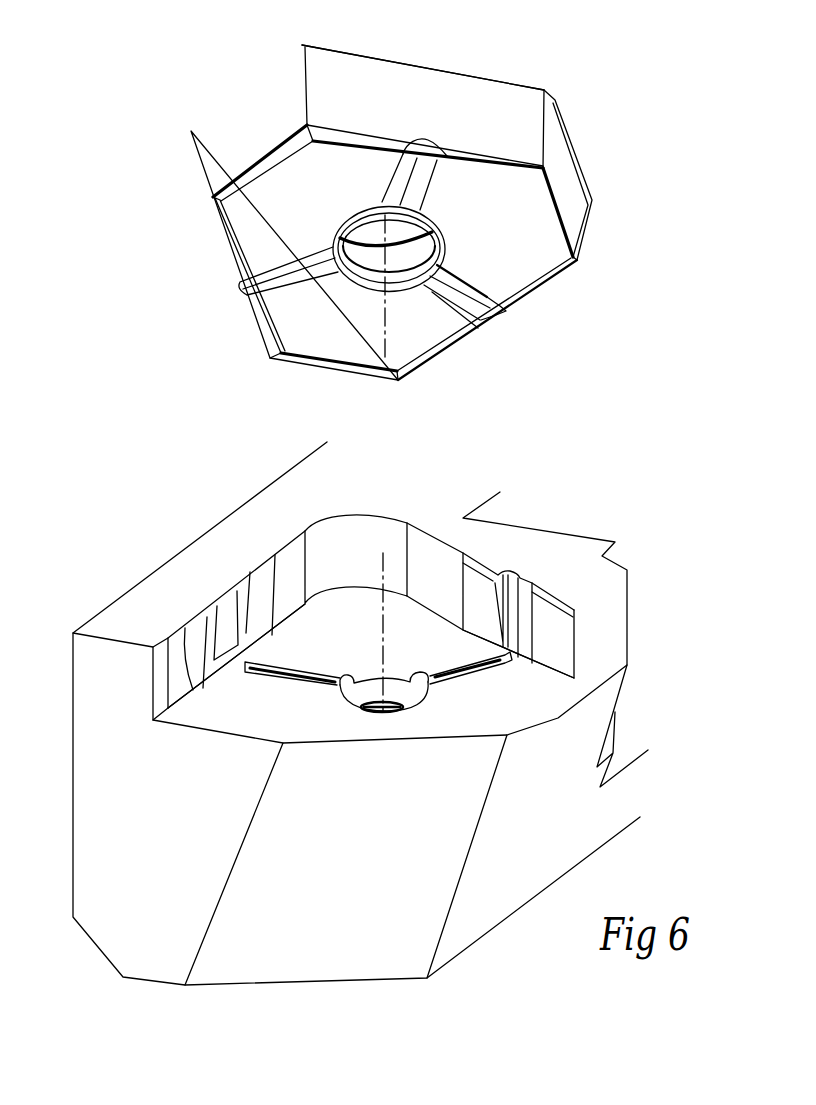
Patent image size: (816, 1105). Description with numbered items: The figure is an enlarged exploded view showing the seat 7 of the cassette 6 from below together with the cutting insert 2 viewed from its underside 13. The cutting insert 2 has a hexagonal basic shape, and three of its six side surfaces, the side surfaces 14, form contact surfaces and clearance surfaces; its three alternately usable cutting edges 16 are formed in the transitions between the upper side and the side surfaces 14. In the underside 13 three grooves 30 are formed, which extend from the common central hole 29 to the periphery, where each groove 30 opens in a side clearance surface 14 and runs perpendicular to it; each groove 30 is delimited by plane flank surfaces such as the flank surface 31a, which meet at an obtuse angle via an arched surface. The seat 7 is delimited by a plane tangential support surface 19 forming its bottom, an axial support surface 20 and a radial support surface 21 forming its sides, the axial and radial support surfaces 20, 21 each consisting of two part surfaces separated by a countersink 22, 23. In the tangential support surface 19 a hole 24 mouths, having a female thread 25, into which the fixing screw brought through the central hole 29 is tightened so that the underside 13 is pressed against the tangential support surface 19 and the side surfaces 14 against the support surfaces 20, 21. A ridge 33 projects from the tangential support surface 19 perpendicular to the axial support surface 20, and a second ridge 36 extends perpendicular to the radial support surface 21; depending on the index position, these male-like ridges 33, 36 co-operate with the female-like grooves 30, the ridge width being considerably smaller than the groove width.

The cutting insert 2 is at (540, 312).
The cutting edges 16 is at (447, 70).
The side surfaces 14 is at (444, 119).
The underside 13 is at (296, 223).
The grooves 30 is at (393, 176).
The flank surface 31a is at (447, 307).
The central hole 29 is at (395, 260).
The cassette 6 is at (360, 749).
The seat 7 is at (352, 549).
The radial support surface 21 is at (207, 630).
The countersink 23 is at (228, 623).
The axial support surface 20 is at (467, 580).
The countersink 22 is at (523, 607).
The tangential support surface 19 is at (356, 648).
The second ridge 36 is at (290, 678).
The ridge 33 is at (467, 673).
The hole 24 is at (353, 695).
The female thread 25 is at (402, 694).